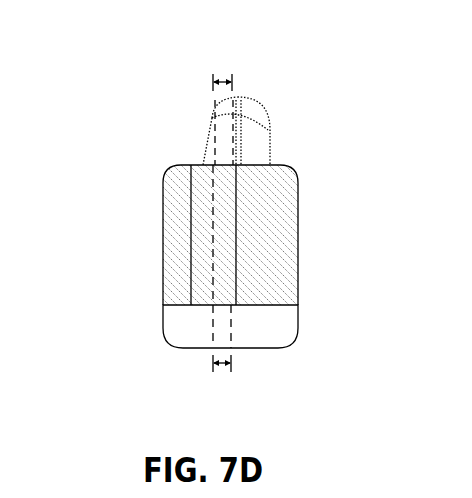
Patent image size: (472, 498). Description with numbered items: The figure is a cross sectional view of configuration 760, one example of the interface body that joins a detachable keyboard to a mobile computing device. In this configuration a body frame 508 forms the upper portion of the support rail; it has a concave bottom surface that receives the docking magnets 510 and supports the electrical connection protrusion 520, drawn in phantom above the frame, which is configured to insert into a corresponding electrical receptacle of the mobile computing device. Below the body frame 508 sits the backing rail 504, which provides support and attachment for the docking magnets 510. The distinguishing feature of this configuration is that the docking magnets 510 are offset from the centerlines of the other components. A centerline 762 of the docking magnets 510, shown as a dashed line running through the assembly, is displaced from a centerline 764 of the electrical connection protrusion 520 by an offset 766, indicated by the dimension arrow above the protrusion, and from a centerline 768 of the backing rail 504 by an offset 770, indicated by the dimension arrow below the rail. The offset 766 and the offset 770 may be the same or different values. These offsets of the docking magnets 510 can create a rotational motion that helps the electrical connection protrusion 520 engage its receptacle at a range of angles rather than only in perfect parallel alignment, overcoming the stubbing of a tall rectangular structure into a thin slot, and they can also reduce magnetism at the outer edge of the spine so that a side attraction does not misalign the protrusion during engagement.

The configuration 760 is at (128, 56).
The offset 766 is at (213, 75).
The centerline of the electrical connection protrusion 764 is at (232, 76).
The docking magnets 510 is at (200, 164).
The electrical connection protrusion 520 is at (268, 125).
The body frame 508 is at (299, 206).
The backing rail 504 is at (299, 318).
The centerline of the docking magnets 762 is at (213, 330).
The centerline of the backing rail 768 is at (236, 338).
The offset 770 is at (220, 365).